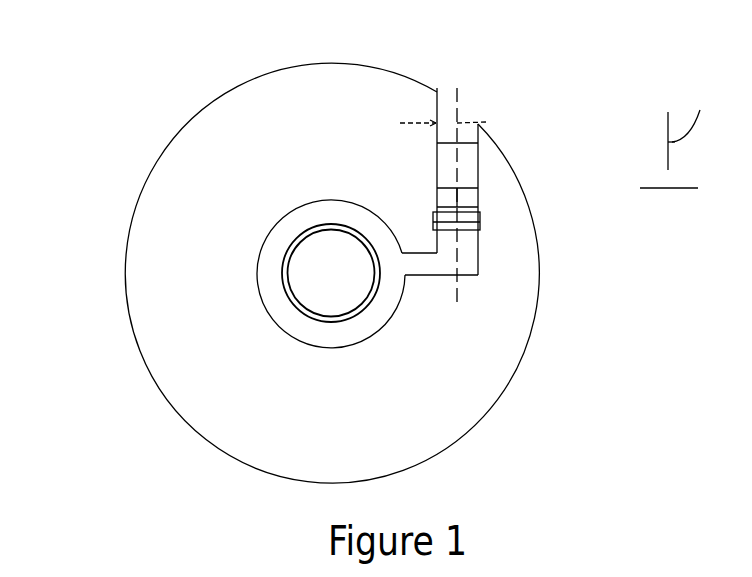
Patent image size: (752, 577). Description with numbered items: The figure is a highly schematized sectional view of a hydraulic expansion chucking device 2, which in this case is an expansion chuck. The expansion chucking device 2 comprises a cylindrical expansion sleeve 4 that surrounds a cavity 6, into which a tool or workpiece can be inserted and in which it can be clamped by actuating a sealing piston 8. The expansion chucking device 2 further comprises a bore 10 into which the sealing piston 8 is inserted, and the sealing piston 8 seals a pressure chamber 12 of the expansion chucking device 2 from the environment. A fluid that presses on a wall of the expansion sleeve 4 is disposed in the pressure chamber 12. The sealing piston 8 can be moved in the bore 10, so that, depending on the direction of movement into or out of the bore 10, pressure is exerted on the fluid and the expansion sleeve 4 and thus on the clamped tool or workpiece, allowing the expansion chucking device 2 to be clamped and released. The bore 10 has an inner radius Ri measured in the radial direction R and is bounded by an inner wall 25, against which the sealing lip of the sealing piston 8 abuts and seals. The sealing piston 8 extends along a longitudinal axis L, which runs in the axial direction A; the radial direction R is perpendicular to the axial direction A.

The expansion chucking device 2 is at (113, 150).
The expansion sleeve 4 is at (307, 317).
The cavity 6 is at (331, 273).
The sealing piston 8 is at (490, 177).
The bore 10 is at (462, 112).
The pressure chamber 12 is at (373, 320).
The inner wall 25 is at (447, 100).
The inner radius Ri is at (436, 123).
The longitudinal axis L is at (460, 257).
The axial direction A is at (689, 124).
The radial direction R is at (653, 190).